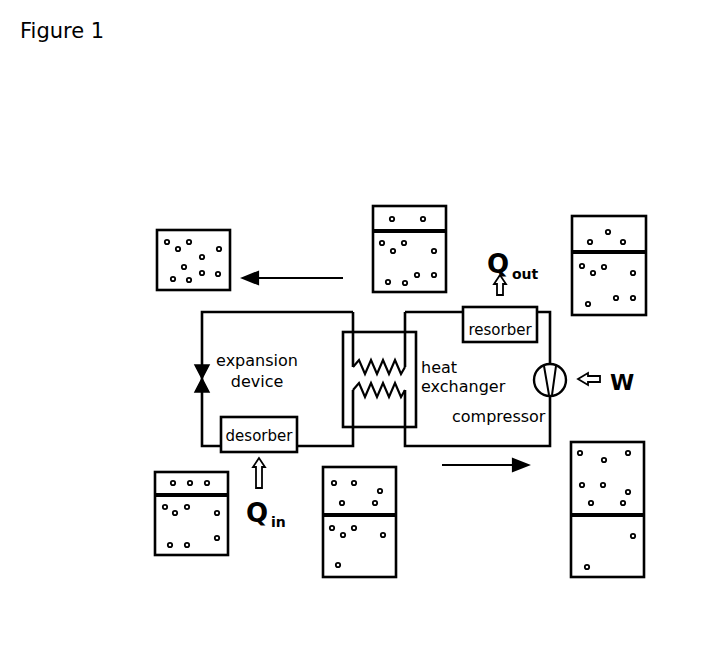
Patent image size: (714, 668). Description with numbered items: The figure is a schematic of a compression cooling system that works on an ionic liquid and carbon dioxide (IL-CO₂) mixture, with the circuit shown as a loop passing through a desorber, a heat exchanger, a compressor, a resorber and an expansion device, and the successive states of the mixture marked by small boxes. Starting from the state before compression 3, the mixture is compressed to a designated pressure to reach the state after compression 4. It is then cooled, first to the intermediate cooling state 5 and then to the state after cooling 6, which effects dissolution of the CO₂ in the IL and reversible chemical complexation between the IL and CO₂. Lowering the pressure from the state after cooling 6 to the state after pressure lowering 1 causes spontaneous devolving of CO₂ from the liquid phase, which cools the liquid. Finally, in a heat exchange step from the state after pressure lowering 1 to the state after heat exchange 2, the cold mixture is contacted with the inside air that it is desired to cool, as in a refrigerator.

The state after pressure lowering 1 is at (191, 534).
The state after heat exchange 2 is at (359, 540).
The state before compression 3 is at (607, 529).
The state after compression 4 is at (609, 252).
The intermediate cooling state 5 is at (409, 235).
The state after cooling 6 is at (193, 247).